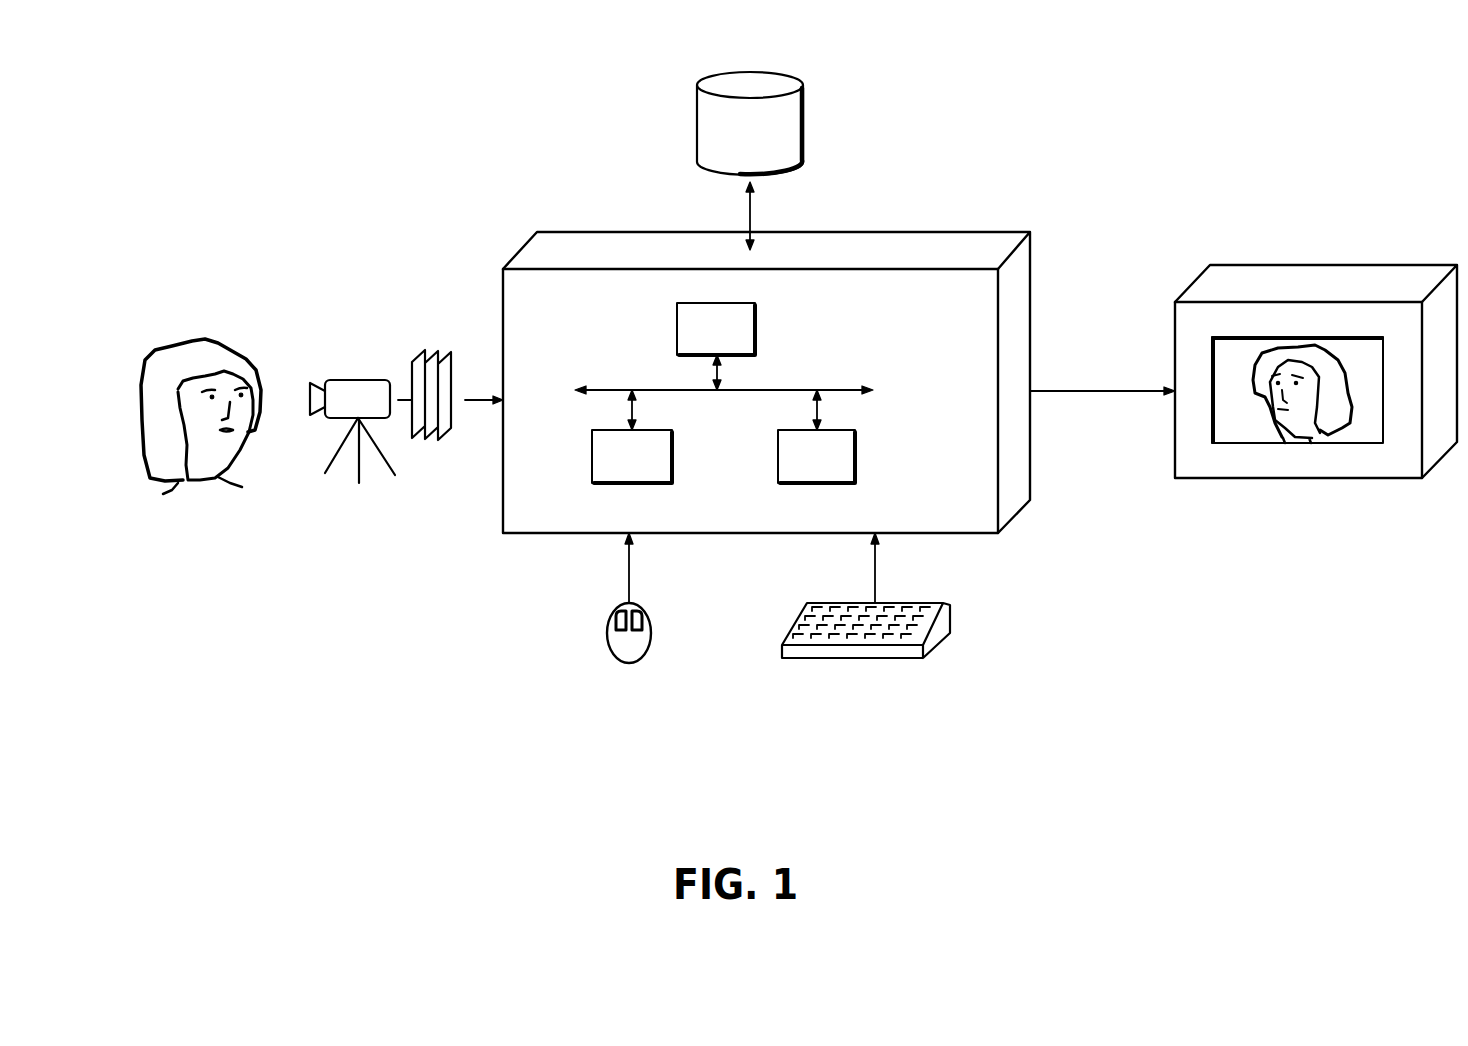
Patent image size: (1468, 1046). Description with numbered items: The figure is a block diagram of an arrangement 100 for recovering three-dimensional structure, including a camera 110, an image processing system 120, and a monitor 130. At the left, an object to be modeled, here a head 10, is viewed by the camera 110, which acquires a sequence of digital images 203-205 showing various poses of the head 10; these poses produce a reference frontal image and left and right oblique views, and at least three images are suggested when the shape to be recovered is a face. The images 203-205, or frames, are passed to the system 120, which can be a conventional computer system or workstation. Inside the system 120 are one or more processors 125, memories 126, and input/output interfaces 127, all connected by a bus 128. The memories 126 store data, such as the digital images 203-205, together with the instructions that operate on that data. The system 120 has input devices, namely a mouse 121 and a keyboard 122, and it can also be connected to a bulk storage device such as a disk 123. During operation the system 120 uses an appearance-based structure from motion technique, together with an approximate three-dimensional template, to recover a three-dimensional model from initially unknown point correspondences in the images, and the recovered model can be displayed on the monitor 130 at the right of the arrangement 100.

The head 10 is at (204, 494).
The camera 110 is at (360, 492).
The sequence of digital images 203-205 is at (434, 343).
The image processing system 120 is at (918, 243).
The disk 123 is at (805, 122).
The processor 125 is at (757, 312).
The memory 126 is at (675, 463).
The input/output interface 127 is at (857, 463).
The bus 128 is at (663, 390).
The mouse 121 is at (629, 663).
The keyboard 122 is at (863, 658).
The monitor 130 is at (1333, 478).
The arrangement 100 is at (762, 777).